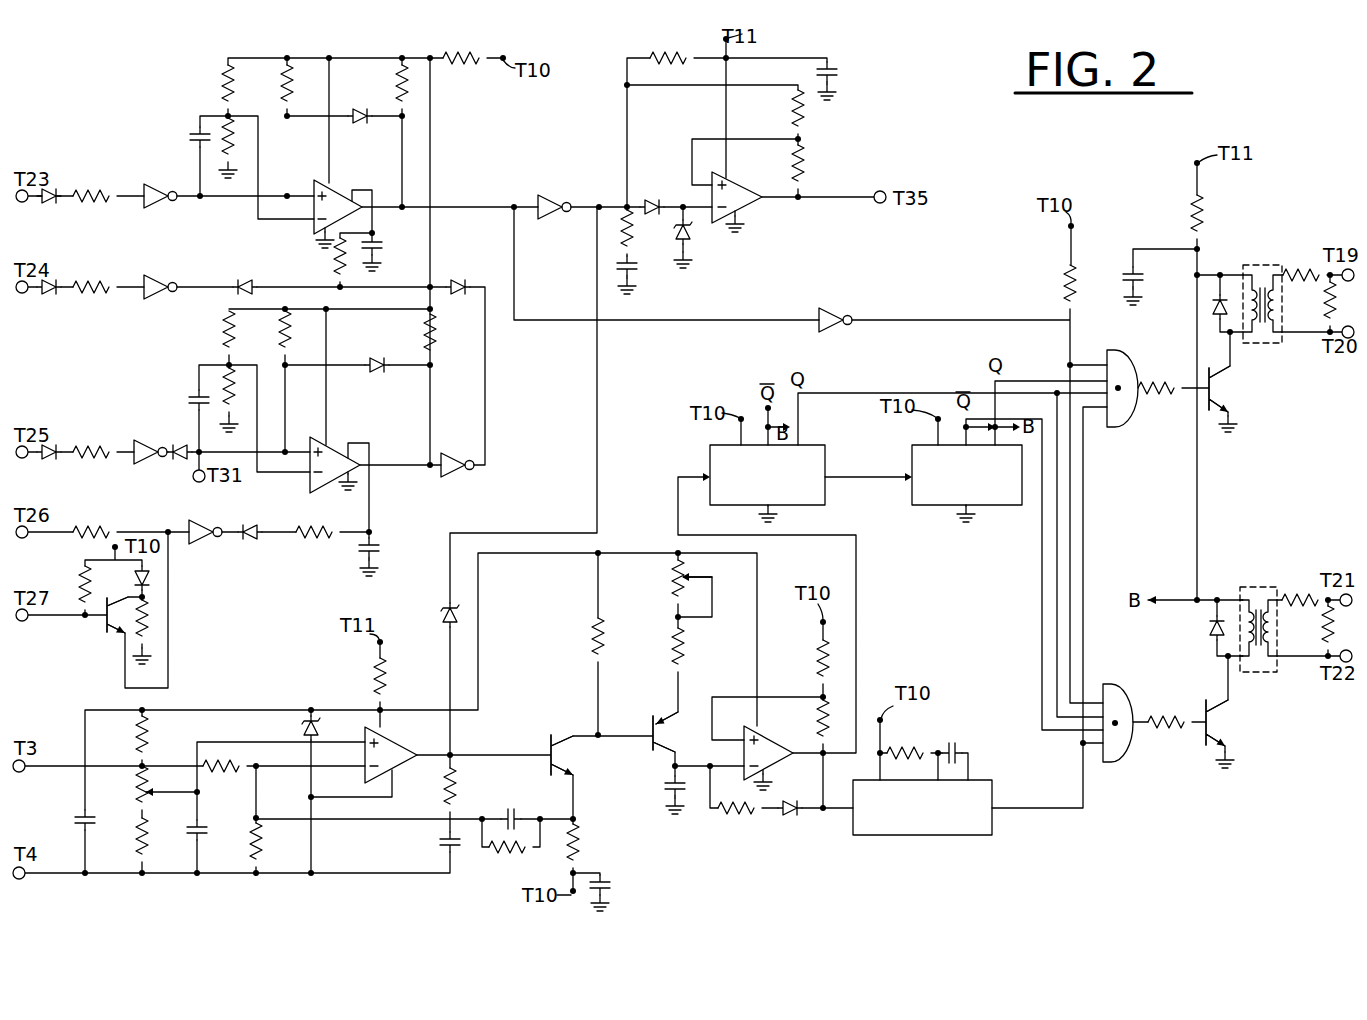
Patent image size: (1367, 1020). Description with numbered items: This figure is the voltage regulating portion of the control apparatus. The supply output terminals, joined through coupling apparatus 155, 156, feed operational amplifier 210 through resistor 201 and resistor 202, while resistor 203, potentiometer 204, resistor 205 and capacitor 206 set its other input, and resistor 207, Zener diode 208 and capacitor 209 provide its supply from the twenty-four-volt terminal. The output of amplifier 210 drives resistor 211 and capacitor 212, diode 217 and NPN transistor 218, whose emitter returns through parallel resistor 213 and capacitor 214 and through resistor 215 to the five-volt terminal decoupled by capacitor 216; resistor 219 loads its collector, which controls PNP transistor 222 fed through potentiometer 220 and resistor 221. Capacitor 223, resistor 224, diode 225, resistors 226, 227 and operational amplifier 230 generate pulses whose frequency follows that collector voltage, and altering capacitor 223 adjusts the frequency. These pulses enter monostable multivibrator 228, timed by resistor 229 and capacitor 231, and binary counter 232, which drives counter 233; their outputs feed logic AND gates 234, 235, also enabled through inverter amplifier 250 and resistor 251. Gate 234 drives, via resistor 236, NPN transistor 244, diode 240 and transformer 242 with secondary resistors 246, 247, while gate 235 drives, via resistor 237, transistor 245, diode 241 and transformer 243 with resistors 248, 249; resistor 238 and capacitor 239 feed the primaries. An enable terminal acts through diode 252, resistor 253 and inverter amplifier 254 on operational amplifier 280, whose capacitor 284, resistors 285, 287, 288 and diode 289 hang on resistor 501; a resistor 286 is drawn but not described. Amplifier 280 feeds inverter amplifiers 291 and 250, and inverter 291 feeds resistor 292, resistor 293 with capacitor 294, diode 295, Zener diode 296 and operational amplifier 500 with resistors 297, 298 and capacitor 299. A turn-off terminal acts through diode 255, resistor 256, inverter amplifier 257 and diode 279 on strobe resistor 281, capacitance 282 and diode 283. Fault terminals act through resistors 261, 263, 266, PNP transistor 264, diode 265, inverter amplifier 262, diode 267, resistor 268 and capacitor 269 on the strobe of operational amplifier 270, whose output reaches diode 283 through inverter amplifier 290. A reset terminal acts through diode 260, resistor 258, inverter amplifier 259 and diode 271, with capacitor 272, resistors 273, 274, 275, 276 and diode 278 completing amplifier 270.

The resistor 201 is at (215, 776).
The resistor 202 is at (248, 841).
The resistor 203 is at (138, 840).
The potentiometer resistor 204 is at (138, 795).
The resistor 205 is at (138, 737).
The capacitor 206 is at (185, 838).
The resistor 207 is at (372, 680).
The Zener diode 208 is at (318, 725).
The capacitor 209 is at (70, 822).
The operational amplifier 210 is at (390, 744).
The resistor 211 is at (458, 792).
The capacitor 212 is at (434, 848).
The resistor 213 is at (507, 852).
The capacitor 214 is at (516, 806).
The resistor 215 is at (582, 846).
The capacitor 216 is at (616, 884).
The diode 217 is at (442, 614).
The NPN transistor 218 is at (545, 742).
The resistor 219 is at (590, 637).
The potentiometer 220 is at (668, 577).
The resistor 221 is at (672, 658).
The PNP transistor 222 is at (648, 759).
The capacitor 223 is at (664, 788).
The resistor 224 is at (734, 818).
The diode 225 is at (793, 820).
The resistor 226 is at (816, 722).
The resistor 227 is at (816, 665).
The monostable multivibrator 228 is at (913, 838).
The resistor 229 is at (924, 735).
The operational amplifier 230 is at (767, 758).
The capacitor 231 is at (956, 741).
The binary counter 232 is at (716, 505).
The counter 233 is at (925, 505).
The logic AND gate 234 is at (1128, 418).
The logic AND gate 235 is at (1120, 752).
The resistor 236 is at (1182, 383).
The resistor 237 is at (1163, 728).
The resistor 238 is at (1203, 222).
The capacitor 239 is at (1123, 262).
The diode 240 is at (1212, 309).
The diode 241 is at (1209, 628).
The transformer 242 is at (1262, 263).
The transformer 243 is at (1252, 583).
The NPN transistor 244 is at (1225, 390).
The NPN transistor 245 is at (1222, 726).
The resistor 246 is at (1304, 276).
The resistor 247 is at (1328, 310).
The resistor 248 is at (1294, 591).
The resistor 249 is at (1324, 629).
The inverter amplifier 250 is at (840, 308).
The resistor 251 is at (1062, 279).
The diode 252 is at (48, 204).
The resistor 253 is at (86, 190).
The inverter amplifier 254 is at (171, 203).
The diode 255 is at (46, 294).
The resistor 256 is at (110, 274).
The inverter amplifier 257 is at (166, 294).
The resistor 258 is at (108, 442).
The inverter amplifier 259 is at (152, 458).
The diode 260 is at (45, 458).
The resistor 261 is at (109, 522).
The inverter amplifier 262 is at (213, 522).
The resistor 263 is at (80, 586).
The PNP transistor 264 is at (100, 628).
The diode 265 is at (138, 580).
The resistor 266 is at (148, 639).
The diode 267 is at (250, 544).
The resistor 268 is at (318, 544).
The capacitor 269 is at (378, 550).
The operational amplifier 270 is at (337, 474).
The diode 271 is at (178, 448).
The capacitor 272 is at (186, 400).
The resistor 273 is at (221, 334).
The resistor 274 is at (236, 400).
The resistor 275 is at (280, 334).
The resistor 276 is at (437, 322).
The diode 278 is at (376, 374).
The diode 279 is at (247, 273).
The operational amplifier 280 is at (336, 190).
The resistor 281 is at (336, 254).
The capacitance 282 is at (380, 247).
The diode 283 is at (460, 268).
The capacitor 284 is at (190, 136).
The resistor 285 is at (222, 86).
The resistor 286 is at (240, 145).
The resistor 287 is at (284, 93).
The resistor 288 is at (395, 87).
The diode 289 is at (365, 110).
The inverter amplifier 290 is at (468, 456).
The inverter amplifier 291 is at (552, 218).
The resistor 292 is at (674, 63).
The resistor 293 is at (632, 234).
The capacitor 294 is at (640, 264).
The diode 295 is at (673, 181).
The Zener diode 296 is at (695, 240).
The resistor 297 is at (806, 118).
The resistor 298 is at (806, 170).
The capacitor 299 is at (838, 68).
The operational amplifier 500 is at (755, 208).
The resistor 501 is at (456, 68).
The coupling apparatus 155 is at (39, 779).
The coupling apparatus 156 is at (39, 886).